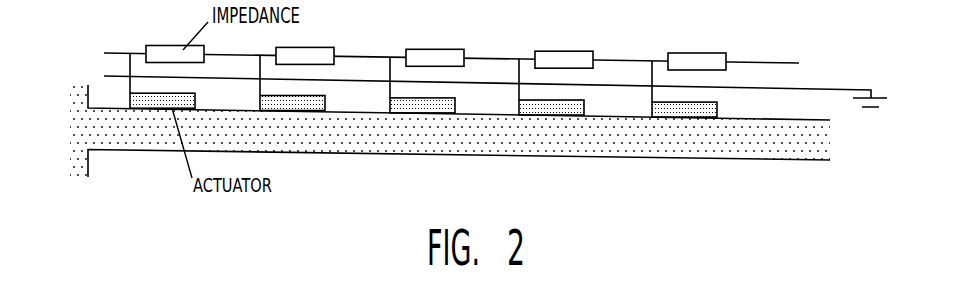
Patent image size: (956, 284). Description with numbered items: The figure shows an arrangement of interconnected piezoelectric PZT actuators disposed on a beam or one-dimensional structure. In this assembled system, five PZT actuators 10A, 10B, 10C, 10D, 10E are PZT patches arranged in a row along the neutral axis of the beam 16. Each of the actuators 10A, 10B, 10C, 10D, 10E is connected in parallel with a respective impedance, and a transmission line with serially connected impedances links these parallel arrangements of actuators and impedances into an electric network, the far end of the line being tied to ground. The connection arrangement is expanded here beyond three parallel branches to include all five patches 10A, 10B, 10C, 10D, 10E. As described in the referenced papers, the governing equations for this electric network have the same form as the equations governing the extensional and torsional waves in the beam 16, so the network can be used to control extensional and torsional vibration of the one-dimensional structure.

The PZT actuator 10A is at (158, 108).
The PZT actuator 10B is at (293, 110).
The PZT actuator 10C is at (425, 113).
The PZT actuator 10D is at (565, 115).
The PZT actuator 10E is at (686, 118).
The beam 16 is at (450, 142).